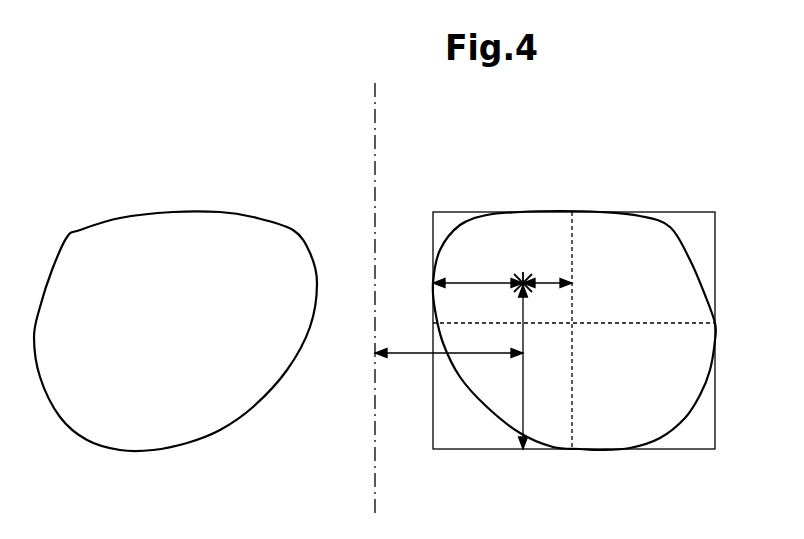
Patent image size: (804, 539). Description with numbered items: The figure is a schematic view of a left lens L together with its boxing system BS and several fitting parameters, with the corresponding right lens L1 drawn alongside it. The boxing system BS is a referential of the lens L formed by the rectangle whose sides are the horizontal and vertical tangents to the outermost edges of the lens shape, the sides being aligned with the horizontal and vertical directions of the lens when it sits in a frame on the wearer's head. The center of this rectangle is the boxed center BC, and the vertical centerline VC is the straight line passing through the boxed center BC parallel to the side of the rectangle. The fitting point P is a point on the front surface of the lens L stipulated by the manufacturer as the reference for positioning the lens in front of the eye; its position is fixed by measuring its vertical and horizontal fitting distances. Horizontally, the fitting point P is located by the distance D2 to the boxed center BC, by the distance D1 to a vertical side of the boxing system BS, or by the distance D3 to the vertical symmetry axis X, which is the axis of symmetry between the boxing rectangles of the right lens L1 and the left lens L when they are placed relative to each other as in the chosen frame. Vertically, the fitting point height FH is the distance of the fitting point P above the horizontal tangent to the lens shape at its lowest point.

The right lens L1 is at (173, 212).
The vertical symmetry axis X is at (373, 143).
The boxing system BS is at (715, 245).
The lens L is at (638, 215).
The vertical centerline VC is at (573, 430).
The boxed center BC is at (573, 327).
The fitting point horizontal distance to a vertical side of the box system D1 is at (480, 282).
The fitting point horizontal distance to the boxed center D2 is at (548, 282).
The horizontal distance to the vertical symmetry axis D3 is at (413, 355).
The fitting point height FH is at (523, 390).
The fitting point P is at (523, 280).